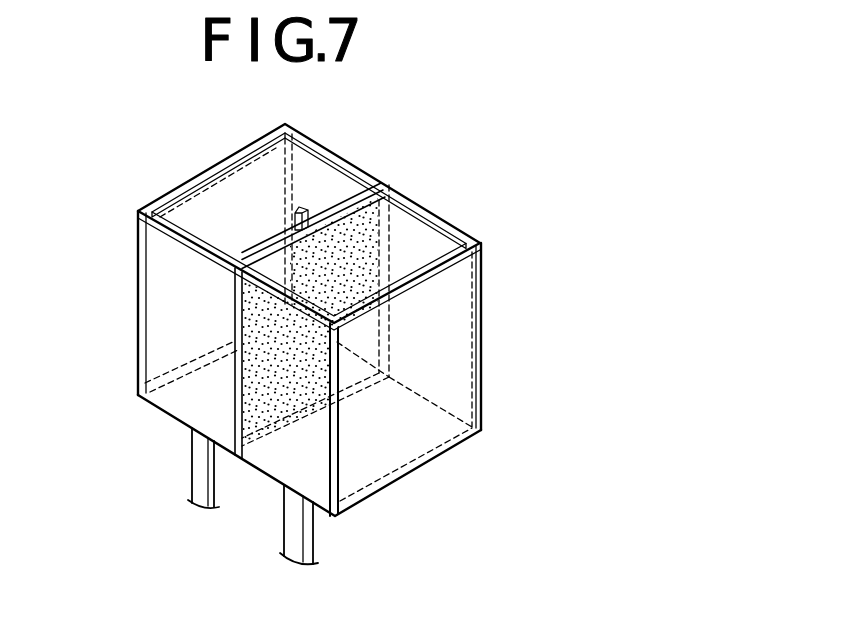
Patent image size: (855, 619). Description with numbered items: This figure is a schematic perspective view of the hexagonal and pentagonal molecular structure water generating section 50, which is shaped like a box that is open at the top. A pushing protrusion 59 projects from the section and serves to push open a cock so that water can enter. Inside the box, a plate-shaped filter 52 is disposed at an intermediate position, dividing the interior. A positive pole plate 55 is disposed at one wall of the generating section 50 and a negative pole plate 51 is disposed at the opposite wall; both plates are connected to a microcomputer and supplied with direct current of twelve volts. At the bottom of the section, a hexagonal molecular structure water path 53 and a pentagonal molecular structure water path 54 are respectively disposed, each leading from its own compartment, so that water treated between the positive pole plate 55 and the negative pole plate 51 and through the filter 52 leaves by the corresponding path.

The hexagonal and pentagonal molecular structure water generating section 50 is at (495, 261).
The negative pole plate 51 is at (460, 346).
The plate-shaped filter 52 is at (240, 398).
The hexagonal molecular structure water path 53 is at (305, 540).
The pentagonal molecular structure water path 54 is at (196, 483).
The positive pole plate 55 is at (145, 304).
The pushing protrusion 59 is at (360, 184).